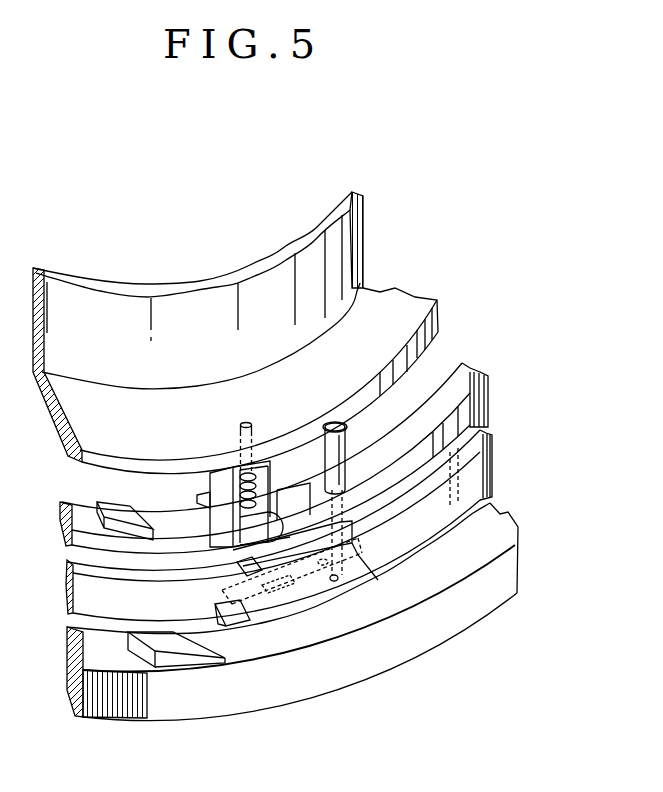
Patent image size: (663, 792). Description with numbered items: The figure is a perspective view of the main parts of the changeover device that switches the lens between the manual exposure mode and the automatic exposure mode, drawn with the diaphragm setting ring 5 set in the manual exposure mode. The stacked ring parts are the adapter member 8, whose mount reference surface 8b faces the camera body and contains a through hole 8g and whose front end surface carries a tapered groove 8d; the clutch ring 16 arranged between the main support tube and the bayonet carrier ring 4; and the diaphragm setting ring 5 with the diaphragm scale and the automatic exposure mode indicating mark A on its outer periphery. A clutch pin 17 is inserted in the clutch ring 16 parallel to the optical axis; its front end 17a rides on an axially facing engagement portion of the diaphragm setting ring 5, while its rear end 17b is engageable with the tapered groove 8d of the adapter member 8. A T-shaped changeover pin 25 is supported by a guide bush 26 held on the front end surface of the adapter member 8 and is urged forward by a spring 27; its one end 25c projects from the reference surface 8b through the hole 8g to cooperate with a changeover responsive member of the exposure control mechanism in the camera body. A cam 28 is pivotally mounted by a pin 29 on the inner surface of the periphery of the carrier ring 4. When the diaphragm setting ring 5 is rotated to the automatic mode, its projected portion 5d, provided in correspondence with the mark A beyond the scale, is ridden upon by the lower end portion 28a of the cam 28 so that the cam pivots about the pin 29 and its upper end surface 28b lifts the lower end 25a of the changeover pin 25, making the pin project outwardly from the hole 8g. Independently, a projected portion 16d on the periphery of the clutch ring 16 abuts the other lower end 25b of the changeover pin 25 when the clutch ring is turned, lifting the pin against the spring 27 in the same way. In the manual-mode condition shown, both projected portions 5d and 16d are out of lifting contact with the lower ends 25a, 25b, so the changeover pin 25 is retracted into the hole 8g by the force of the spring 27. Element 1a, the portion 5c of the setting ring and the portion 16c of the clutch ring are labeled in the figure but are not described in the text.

The aperture scale 1a is at (313, 704).
The bayonet carrier ring 4 is at (487, 467).
The diaphragm setting ring 5 is at (500, 528).
The projection of setting ring 5c is at (233, 620).
The projected portion 5d is at (135, 648).
The adapter member 8 is at (349, 253).
The mount reference surface 8b is at (398, 305).
The tapered groove 8d is at (326, 428).
The through hole 8g is at (247, 422).
The clutch ring 16 is at (470, 378).
The end portion of intermediate ring 16c is at (470, 430).
The projected portion 16d is at (115, 506).
The clutch pin 17 is at (344, 455).
The front end of clutch pin 17a is at (337, 580).
The rear end of clutch pin 17b is at (336, 421).
The changeover pin 25 is at (240, 492).
The lower end of changeover pin 25a is at (290, 513).
The lower end of changeover pin 25b is at (200, 501).
The end of changeover pin 25c is at (255, 473).
The guide bush 26 is at (272, 475).
The spring 27 is at (243, 516).
The cam member 28 is at (300, 585).
The lower end portion of cam 28a is at (276, 592).
The upper end surface of cam 28b is at (238, 575).
The pin 29 is at (345, 562).